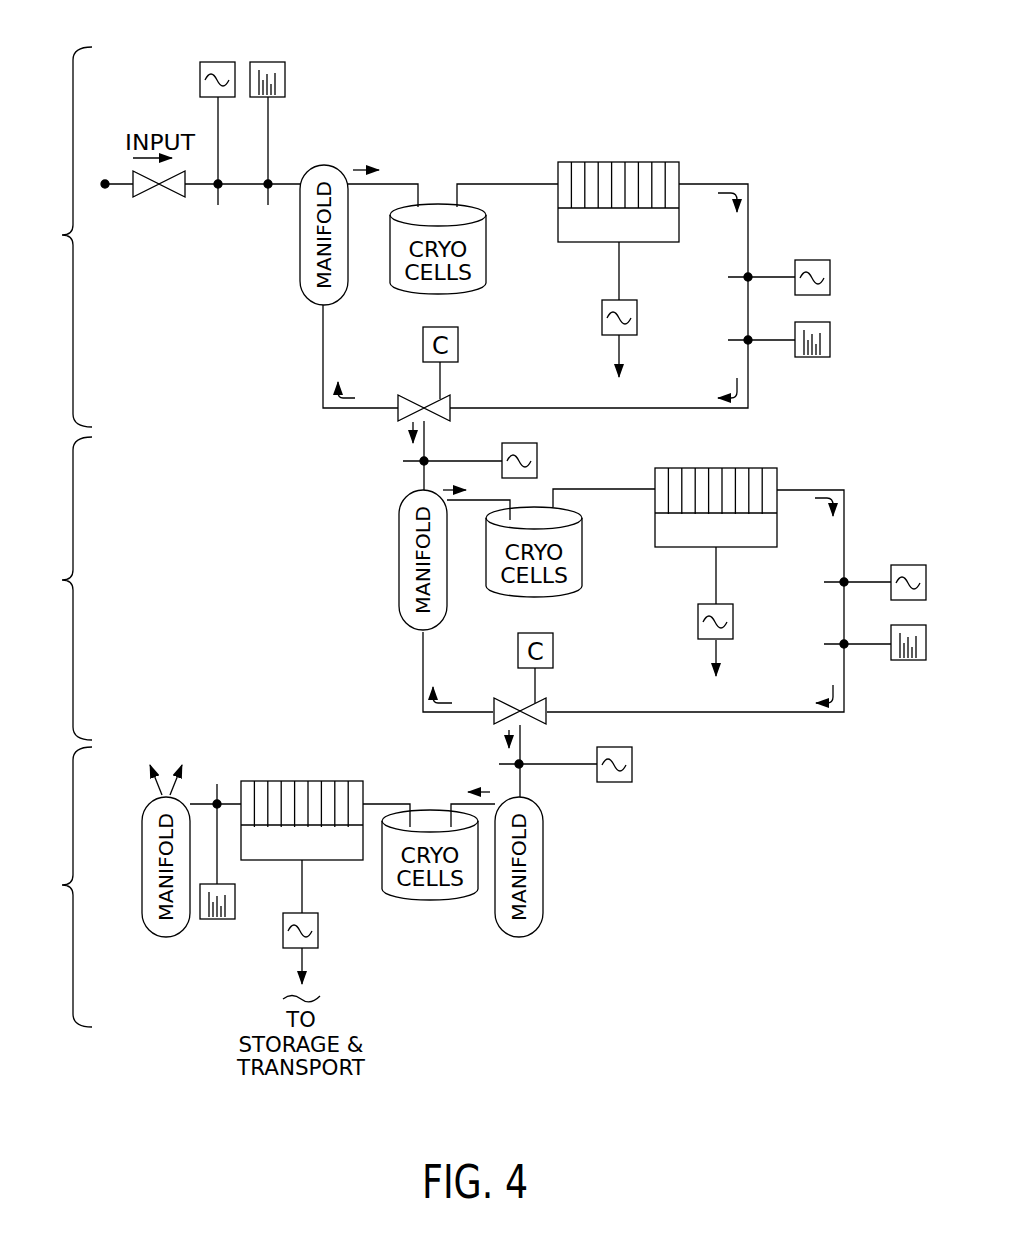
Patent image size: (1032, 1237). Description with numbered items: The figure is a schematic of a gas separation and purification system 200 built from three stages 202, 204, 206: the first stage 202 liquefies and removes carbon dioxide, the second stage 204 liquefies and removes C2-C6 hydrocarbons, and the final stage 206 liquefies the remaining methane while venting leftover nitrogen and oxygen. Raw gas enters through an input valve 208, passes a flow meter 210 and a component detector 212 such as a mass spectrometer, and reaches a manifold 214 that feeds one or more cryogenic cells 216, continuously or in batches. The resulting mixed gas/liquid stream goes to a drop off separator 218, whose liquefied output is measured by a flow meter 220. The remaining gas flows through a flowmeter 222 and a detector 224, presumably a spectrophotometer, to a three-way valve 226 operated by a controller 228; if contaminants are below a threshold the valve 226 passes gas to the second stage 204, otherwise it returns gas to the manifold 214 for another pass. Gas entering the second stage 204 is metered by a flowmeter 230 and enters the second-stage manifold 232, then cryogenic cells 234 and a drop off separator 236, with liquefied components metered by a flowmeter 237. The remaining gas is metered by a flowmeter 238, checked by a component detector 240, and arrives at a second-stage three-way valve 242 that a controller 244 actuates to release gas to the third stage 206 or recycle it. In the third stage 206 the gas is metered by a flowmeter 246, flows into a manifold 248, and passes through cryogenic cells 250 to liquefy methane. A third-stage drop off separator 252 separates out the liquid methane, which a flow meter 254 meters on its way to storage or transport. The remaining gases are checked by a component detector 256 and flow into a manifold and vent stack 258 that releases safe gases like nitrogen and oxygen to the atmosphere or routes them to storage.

The system 200 is at (812, 60).
The first stage 202 is at (54, 237).
The second stage 204 is at (54, 588).
The final stage 206 is at (54, 887).
The input valve 208 is at (152, 200).
The flow meter 210 is at (200, 69).
The component detector 212 is at (285, 75).
The manifold 214 is at (320, 165).
The cryogenic cells 216 is at (487, 267).
The drop off separator 218 is at (579, 162).
The flow meter 220 is at (632, 337).
The flowmeter 222 is at (802, 260).
The detector 224 is at (822, 358).
The three-way valve 226 is at (452, 398).
The controller 228 is at (423, 342).
The flowmeter 230 is at (537, 451).
The second-stage manifold 232 is at (399, 548).
The cryogenic cells 234 is at (583, 575).
The drop off separator 236 is at (676, 468).
The flowmeter 237 is at (728, 640).
The flowmeter 238 is at (899, 565).
The component detector 240 is at (920, 661).
The second-stage three-way valve 242 is at (548, 701).
The controller 244 is at (553, 637).
The flowmeter 246 is at (633, 758).
The manifold 248 is at (545, 873).
The cryogenic cells 250 is at (437, 903).
The third-stage drop off separator 252 is at (300, 781).
The flow meter 254 is at (320, 943).
The component detector 256 is at (228, 920).
The manifold and vent stack 258 is at (142, 833).